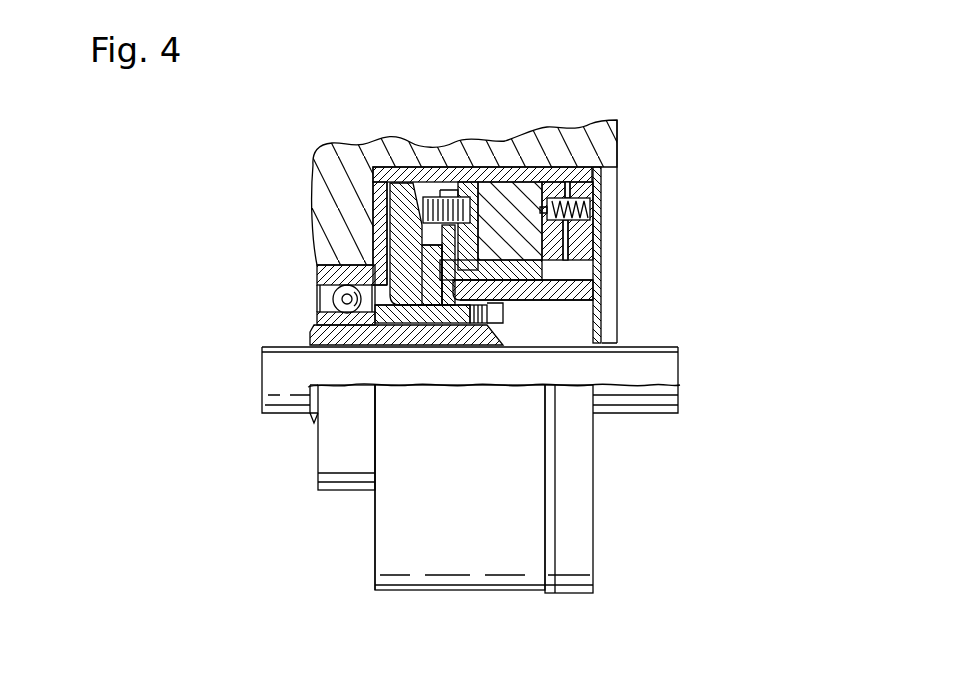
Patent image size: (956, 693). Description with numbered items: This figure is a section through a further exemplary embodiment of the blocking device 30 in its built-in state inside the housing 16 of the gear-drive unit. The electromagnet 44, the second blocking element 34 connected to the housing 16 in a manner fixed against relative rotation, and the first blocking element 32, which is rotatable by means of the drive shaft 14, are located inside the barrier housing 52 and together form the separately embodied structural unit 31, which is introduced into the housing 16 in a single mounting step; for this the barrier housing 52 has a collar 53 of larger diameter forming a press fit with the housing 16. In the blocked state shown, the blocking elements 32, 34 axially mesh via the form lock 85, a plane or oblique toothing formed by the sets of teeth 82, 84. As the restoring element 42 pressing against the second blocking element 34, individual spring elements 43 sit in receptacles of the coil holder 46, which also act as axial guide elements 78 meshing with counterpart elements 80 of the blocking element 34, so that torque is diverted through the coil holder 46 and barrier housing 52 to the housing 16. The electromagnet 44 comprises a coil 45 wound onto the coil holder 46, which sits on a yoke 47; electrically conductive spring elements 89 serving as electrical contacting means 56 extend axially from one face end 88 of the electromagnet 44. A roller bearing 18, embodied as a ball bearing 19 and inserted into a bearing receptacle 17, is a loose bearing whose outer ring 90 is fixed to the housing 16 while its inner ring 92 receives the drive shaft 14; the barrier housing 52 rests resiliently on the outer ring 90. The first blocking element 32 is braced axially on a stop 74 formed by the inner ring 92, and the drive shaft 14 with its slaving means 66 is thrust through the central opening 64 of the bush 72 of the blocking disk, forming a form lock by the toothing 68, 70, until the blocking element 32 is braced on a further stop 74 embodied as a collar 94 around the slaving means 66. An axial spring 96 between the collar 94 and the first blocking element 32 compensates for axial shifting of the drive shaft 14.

The drive shaft 14 is at (678, 397).
The housing 16 is at (330, 184).
The bearing receptacle 17 is at (347, 295).
The roller bearing 18 is at (350, 460).
The ball bearing 19 is at (303, 293).
The blocking device 30 is at (267, 505).
The structural unit 31 is at (345, 597).
The first blocking element 32 is at (372, 167).
The second blocking element 34 is at (372, 263).
The restoring element 42 is at (511, 147).
The spring elements 43 is at (505, 218).
The electromagnet 44 is at (562, 168).
The coil 45 is at (531, 185).
The coil holder 46 is at (560, 262).
The yoke 47 is at (543, 330).
The barrier housing 52 is at (583, 167).
The collar 53 is at (573, 558).
The electrical contacting means 56 is at (631, 169).
The central opening 64 is at (532, 295).
The slaving means 66 is at (368, 332).
The inner toothing 68 is at (575, 409).
The toothing 70 is at (487, 310).
The bush 72 is at (447, 317).
The stop 74 is at (330, 316).
The axial guide elements 78 is at (457, 185).
The counterpart elements 80 is at (440, 182).
The set of teeth 82 is at (400, 128).
The set of teeth 84 is at (373, 167).
The form lock 85 is at (400, 128).
The face end 88 is at (570, 235).
The electrically conductive spring elements 89 is at (565, 203).
The outer ring 90 is at (340, 280).
The inner ring 92 is at (307, 322).
The collar 94 is at (462, 325).
The axial spring 96 is at (550, 290).